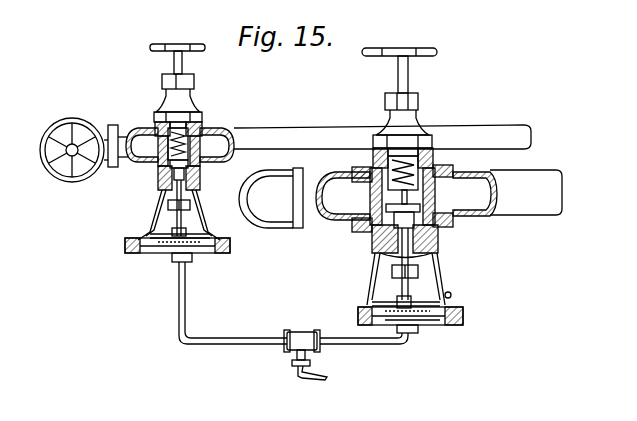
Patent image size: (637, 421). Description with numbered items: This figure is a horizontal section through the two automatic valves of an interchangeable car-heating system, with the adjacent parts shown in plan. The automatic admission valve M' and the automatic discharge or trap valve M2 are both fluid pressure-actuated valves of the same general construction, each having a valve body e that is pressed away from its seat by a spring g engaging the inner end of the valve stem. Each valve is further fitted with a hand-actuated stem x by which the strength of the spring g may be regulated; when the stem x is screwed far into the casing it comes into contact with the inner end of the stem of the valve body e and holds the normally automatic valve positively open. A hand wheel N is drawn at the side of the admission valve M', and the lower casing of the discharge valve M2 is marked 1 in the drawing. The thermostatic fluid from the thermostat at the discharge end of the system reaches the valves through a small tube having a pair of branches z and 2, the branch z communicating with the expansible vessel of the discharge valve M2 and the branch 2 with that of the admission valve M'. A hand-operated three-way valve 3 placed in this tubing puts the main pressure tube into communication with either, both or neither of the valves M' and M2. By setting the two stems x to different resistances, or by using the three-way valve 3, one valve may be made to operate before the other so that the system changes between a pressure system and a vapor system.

The automatic admission valve M' is at (183, 153).
The hand wheel N is at (112, 172).
The spring g is at (442, 150).
The automatic discharge valve M2 is at (413, 190).
The hand-actuated stem x is at (407, 75).
The valve body e is at (372, 228).
The branch 2 is at (238, 342).
The hand-operated three-way valve 3 is at (302, 334).
The branch z is at (350, 341).
The diaphragm chamber 1 is at (425, 320).